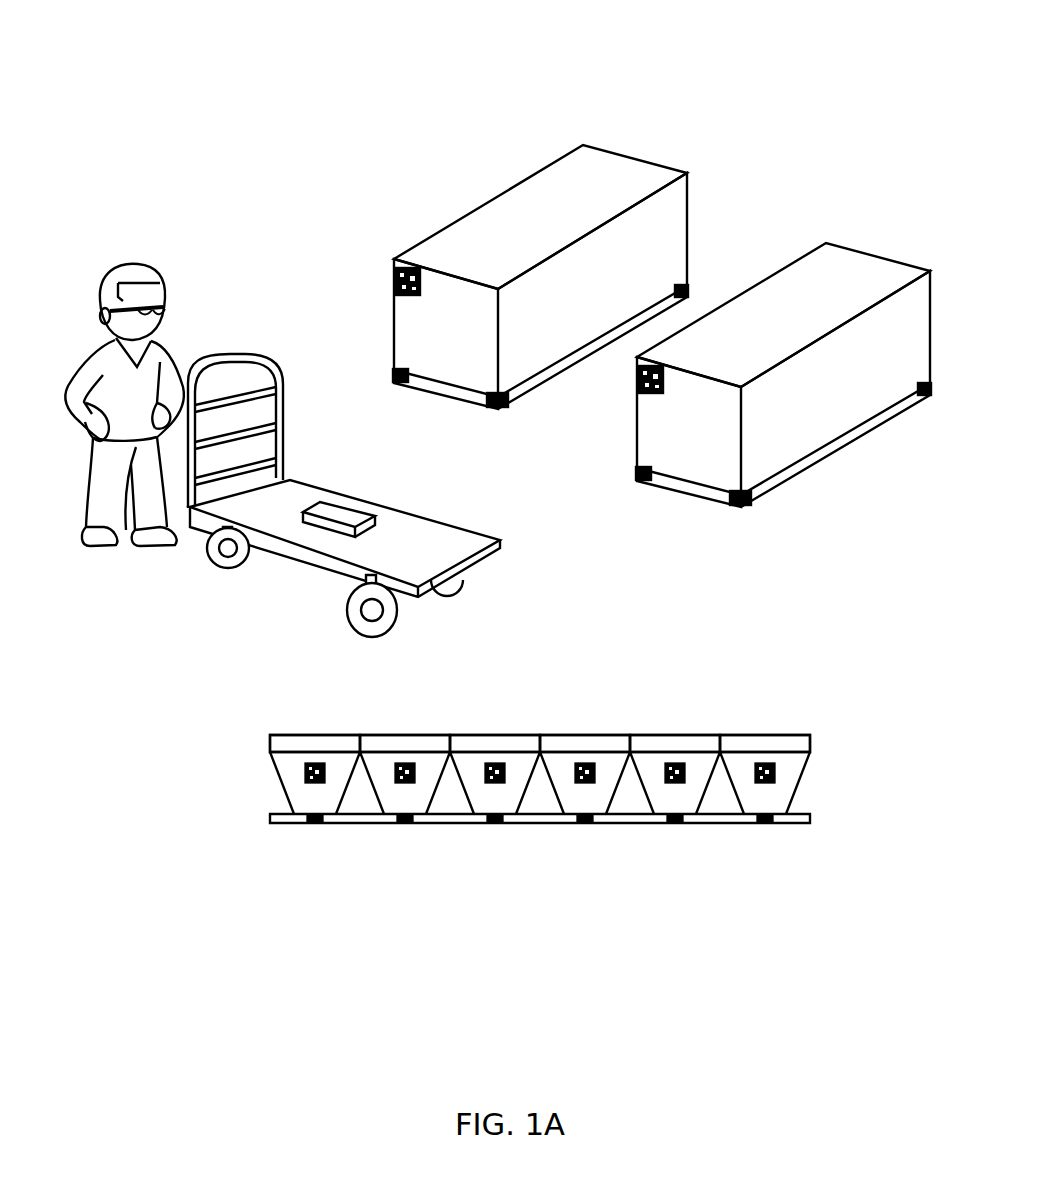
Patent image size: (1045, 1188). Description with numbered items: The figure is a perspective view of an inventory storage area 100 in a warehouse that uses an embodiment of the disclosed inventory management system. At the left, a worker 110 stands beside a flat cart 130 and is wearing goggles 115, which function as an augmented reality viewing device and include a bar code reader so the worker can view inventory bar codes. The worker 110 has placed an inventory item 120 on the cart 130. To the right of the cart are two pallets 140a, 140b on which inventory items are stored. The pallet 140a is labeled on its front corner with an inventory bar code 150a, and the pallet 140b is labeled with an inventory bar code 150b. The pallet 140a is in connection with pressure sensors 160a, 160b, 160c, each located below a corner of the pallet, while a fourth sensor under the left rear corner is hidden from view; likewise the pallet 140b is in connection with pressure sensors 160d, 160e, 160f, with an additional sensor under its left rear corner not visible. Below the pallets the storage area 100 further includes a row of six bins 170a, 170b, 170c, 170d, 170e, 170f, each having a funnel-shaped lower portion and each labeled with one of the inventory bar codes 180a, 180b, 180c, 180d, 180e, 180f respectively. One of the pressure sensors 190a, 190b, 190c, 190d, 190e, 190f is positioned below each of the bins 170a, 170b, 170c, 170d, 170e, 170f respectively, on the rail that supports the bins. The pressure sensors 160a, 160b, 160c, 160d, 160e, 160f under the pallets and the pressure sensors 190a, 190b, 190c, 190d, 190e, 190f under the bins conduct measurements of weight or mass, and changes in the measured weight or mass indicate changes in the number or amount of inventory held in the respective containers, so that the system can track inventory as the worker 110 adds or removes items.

The inventory storage area 100 is at (183, 50).
The worker 110 is at (90, 541).
The goggles 115 is at (167, 308).
The inventory item 120 is at (320, 505).
The cart 130 is at (423, 532).
The pallet 140a is at (617, 173).
The pallet 140b is at (848, 263).
The inventory bar code 150a is at (393, 283).
The inventory bar code 150b is at (638, 378).
The pressure sensor 160a is at (396, 385).
The pressure sensor 160b is at (500, 410).
The pressure sensor 160c is at (688, 286).
The pressure sensor 160d is at (639, 483).
The pressure sensor 160e is at (742, 508).
The pressure sensor 160f is at (925, 396).
The bin 170a is at (315, 740).
The bin 170b is at (405, 740).
The bin 170c is at (495, 740).
The bin 170d is at (585, 740).
The bin 170e is at (675, 740).
The bin 170f is at (765, 740).
The inventory bar code 180a is at (303, 773).
The inventory bar code 180b is at (392, 780).
The inventory bar code 180c is at (487, 778).
The inventory bar code 180d is at (577, 783).
The inventory bar code 180e is at (683, 780).
The inventory bar code 180f is at (778, 776).
The pressure sensor 190a is at (307, 823).
The pressure sensor 190b is at (403, 825).
The pressure sensor 190c is at (493, 825).
The pressure sensor 190d is at (582, 825).
The pressure sensor 190e is at (673, 825).
The pressure sensor 190f is at (767, 824).